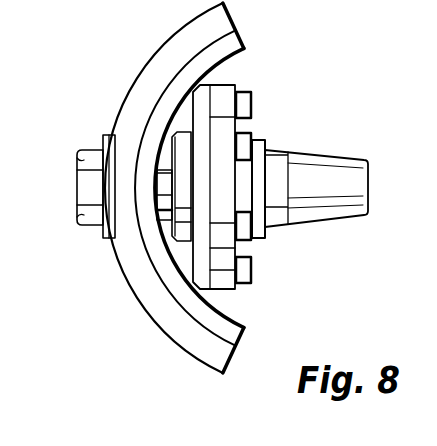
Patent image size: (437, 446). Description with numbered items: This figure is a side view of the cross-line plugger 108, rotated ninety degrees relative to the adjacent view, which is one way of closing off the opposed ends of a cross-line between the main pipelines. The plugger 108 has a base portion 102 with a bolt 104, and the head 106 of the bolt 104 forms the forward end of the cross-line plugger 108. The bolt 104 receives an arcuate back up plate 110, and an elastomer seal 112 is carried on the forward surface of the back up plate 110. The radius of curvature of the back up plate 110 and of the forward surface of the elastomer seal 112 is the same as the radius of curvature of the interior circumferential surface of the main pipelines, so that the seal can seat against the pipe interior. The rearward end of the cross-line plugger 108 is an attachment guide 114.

The base portion 102 is at (203, 283).
The bolt 104 is at (163, 220).
The head 106 is at (91, 157).
The cross-line plugger 108 is at (277, 50).
The arcuate back up plate 110 is at (207, 58).
The elastomer seal 112 is at (170, 47).
The attachment guide 114 is at (313, 168).